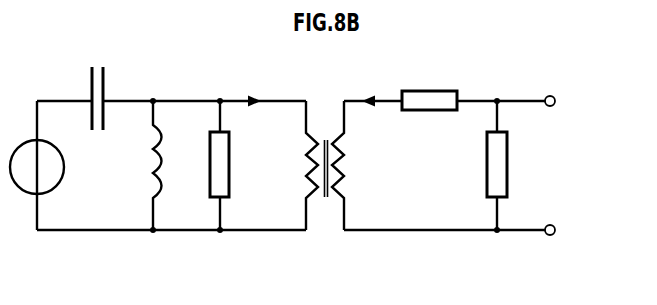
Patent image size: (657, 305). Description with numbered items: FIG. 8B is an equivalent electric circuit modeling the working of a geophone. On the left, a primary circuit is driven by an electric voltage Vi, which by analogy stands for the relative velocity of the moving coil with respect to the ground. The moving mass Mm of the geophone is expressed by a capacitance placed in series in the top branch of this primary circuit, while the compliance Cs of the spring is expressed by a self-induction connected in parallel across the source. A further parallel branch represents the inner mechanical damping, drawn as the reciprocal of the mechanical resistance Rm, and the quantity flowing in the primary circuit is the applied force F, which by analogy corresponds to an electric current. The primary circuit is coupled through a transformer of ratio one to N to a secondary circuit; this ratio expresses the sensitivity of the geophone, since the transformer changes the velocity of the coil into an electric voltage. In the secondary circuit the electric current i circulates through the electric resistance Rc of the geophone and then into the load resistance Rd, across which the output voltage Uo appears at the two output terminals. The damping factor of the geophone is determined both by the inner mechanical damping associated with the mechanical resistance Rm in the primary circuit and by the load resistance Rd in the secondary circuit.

The electric voltage Vi is at (48, 167).
The moving mass Mm is at (117, 97).
The compliance of the spring Cs is at (142, 165).
The inner mechanical damping Rm is at (273, 167).
The applied force F is at (249, 85).
The electric current i is at (371, 85).
The electric resistance of the geophone Rc is at (429, 86).
The load resistance Rd is at (479, 165).
The output voltage Uo is at (549, 165).